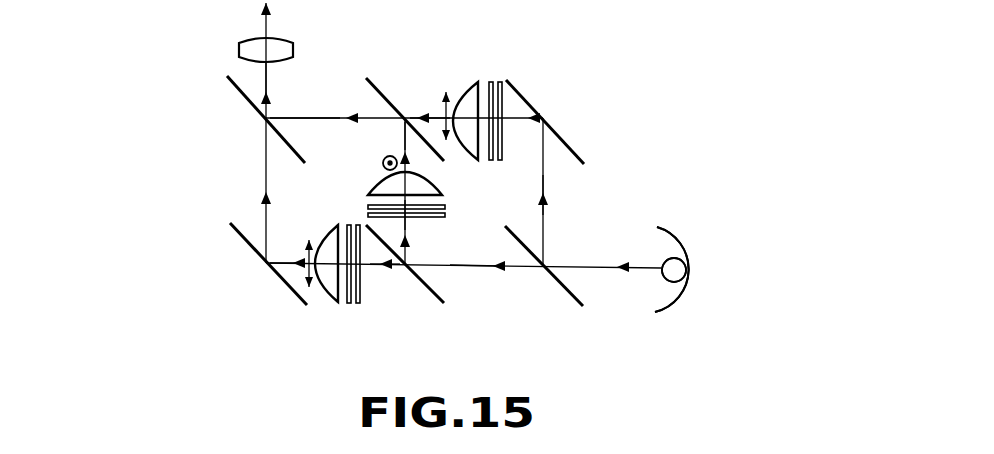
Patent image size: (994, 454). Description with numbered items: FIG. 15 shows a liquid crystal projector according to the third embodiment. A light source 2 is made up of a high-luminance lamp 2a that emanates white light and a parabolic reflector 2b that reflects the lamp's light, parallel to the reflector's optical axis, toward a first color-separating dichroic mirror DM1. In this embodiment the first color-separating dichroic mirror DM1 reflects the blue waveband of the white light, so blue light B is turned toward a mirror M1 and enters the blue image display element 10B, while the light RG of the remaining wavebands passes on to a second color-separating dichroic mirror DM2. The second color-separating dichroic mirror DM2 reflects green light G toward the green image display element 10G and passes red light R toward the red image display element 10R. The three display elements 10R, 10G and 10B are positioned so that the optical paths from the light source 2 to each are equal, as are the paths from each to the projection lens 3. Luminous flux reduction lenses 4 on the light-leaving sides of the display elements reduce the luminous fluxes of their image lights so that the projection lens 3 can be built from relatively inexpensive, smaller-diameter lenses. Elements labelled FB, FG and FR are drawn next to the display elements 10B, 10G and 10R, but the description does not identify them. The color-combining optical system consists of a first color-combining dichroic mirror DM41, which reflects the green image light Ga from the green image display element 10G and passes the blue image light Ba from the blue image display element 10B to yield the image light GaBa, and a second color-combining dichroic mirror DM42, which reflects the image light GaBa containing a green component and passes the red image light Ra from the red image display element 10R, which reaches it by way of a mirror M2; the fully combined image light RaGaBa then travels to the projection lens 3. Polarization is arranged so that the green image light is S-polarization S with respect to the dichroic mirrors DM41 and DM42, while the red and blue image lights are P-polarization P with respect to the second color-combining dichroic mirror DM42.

The light source 2 is at (681, 221).
The high-luminance lamp 2a is at (664, 262).
The reflector 2b is at (685, 294).
The projection lens 3 is at (262, 42).
The luminous flux reduction lens 4 is at (478, 82).
The blue image display element 10B is at (491, 82).
The green image display element 10G is at (368, 207).
The red image display element 10R is at (352, 305).
The blue filter FB is at (503, 92).
The green filter FG is at (445, 220).
The red filter FR is at (360, 287).
The mirror M1 is at (562, 140).
The mirror M2 is at (246, 250).
The first color-separating dichroic mirror DM1 is at (563, 290).
The second color-separating dichroic mirror DM2 is at (432, 293).
The first color-combining dichroic mirror DM41 is at (373, 85).
The second color-combining dichroic mirror DM42 is at (246, 98).
The P-polarization P is at (447, 106).
The S-polarization S is at (383, 165).
The blue light B is at (545, 190).
The light of the wavebands passed by the first color-separating dichroic mirror RG is at (467, 267).
The red light R is at (395, 267).
The green light G is at (405, 225).
The red image light Ra is at (278, 268).
The green image light Ga is at (403, 131).
The blue image light Ba is at (413, 115).
The image light containing a green component GaBa is at (312, 97).
The combined red, green and blue light RaGaBa is at (265, 77).